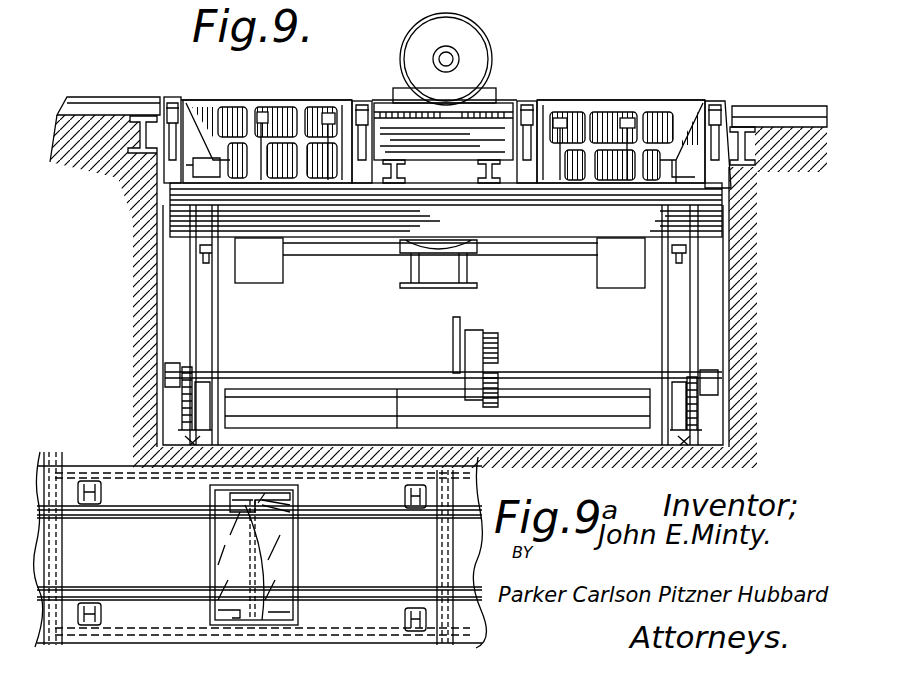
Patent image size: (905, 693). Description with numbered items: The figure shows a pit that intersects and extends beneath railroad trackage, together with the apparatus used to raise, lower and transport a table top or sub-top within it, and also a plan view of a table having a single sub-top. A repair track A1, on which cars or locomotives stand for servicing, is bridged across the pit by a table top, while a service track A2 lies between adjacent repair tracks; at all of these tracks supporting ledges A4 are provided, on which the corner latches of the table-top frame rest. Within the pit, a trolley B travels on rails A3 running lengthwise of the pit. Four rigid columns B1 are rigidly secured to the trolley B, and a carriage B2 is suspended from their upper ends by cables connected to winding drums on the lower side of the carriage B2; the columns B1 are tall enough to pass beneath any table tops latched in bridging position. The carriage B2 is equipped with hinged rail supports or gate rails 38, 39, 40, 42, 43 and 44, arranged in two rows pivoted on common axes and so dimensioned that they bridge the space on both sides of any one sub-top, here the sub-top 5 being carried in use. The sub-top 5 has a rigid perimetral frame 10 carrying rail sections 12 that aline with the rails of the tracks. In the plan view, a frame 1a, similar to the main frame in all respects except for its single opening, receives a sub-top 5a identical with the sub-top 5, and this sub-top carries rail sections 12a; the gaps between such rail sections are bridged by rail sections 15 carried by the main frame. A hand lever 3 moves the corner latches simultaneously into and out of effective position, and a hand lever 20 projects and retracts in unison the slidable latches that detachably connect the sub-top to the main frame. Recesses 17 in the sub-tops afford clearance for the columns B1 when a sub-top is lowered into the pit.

In FIG. 9, the service track A2 is at (107, 100).
In FIG. 9, the supporting ledges A4 is at (150, 155).
In FIG. 9, the rails A3 is at (205, 436).
In FIG. 9A, the repair track A1 is at (40, 529).
In FIG. 9, the carriage B2 is at (446, 210).
In FIG. 9, the rigid columns B1 is at (220, 318).
In FIG. 9A, the rigid columns B1 is at (103, 496).
In FIG. 9, the trolley B is at (355, 400).
In FIG. 9, the gate rail 38 is at (173, 100).
In FIG. 9, the gate rail 39 is at (270, 100).
In FIG. 9, the gate rail 40 is at (363, 102).
In FIG. 9, the sub-top 5 is at (507, 95).
In FIG. 9, the rail sections 12 is at (383, 105).
In FIG. 9A, the rail sections 12 is at (222, 600).
In FIG. 9, the perimetral frame 10 is at (447, 153).
In FIG. 9A, the perimetral frame 10 is at (285, 561).
In FIG. 9, the gate rail 42 is at (528, 104).
In FIG. 9, the gate rail 43 is at (612, 107).
In FIG. 9, the gate rail 44 is at (718, 107).
In FIG. 9A, the recesses 17 is at (98, 485).
In FIG. 9A, the rail sections 15 is at (139, 512).
In FIG. 9A, the frame 1a is at (202, 468).
In FIG. 9A, the hand lever 20 is at (292, 498).
In FIG. 9A, the rail sections 12a is at (237, 548).
In FIG. 9A, the sub-top 5a is at (239, 561).
In FIG. 9A, the hand lever 3 is at (260, 550).